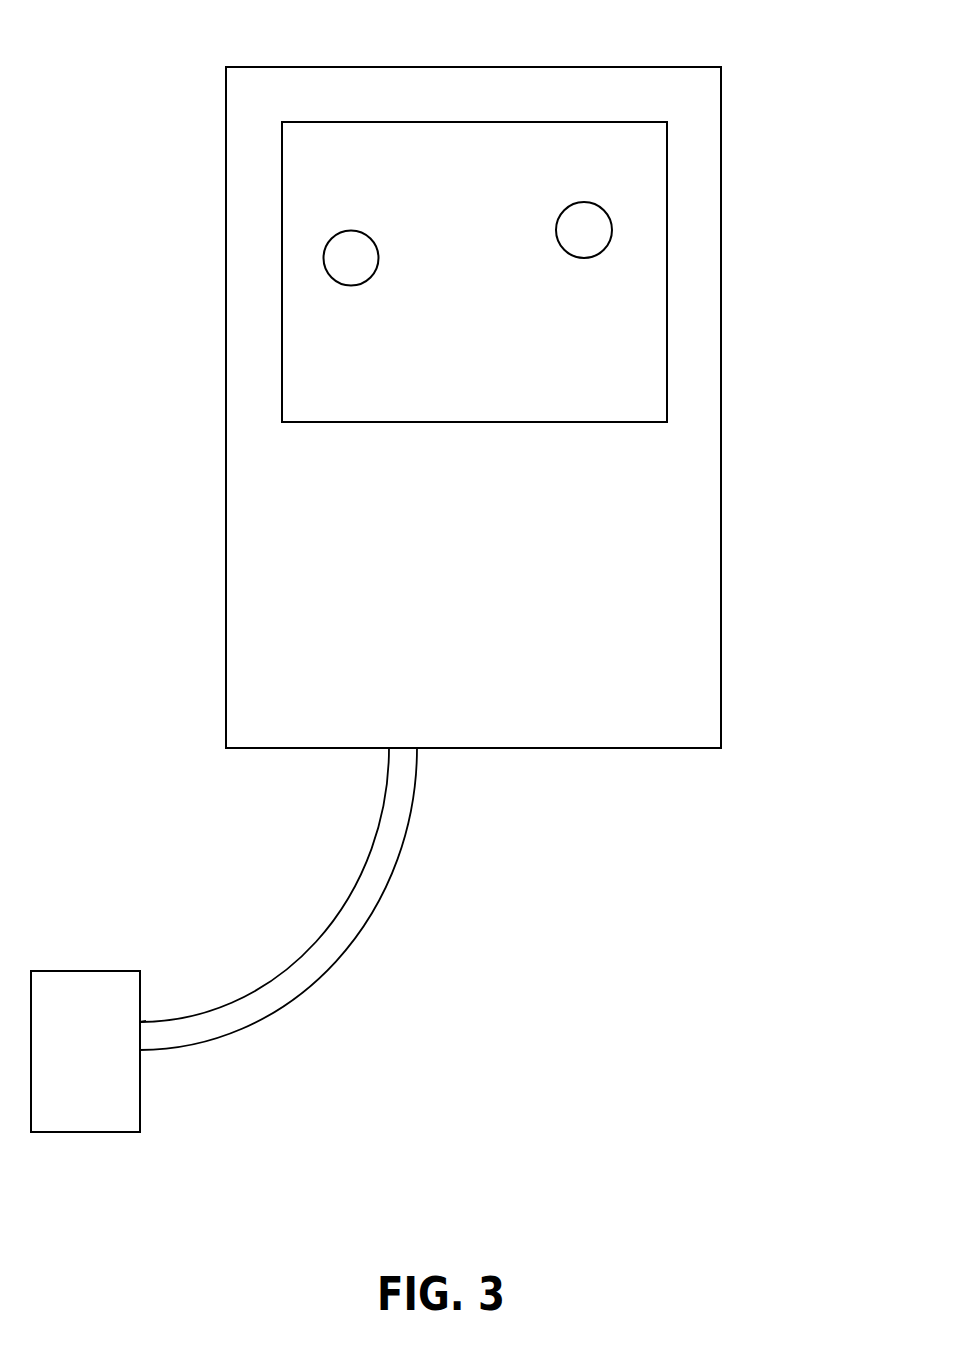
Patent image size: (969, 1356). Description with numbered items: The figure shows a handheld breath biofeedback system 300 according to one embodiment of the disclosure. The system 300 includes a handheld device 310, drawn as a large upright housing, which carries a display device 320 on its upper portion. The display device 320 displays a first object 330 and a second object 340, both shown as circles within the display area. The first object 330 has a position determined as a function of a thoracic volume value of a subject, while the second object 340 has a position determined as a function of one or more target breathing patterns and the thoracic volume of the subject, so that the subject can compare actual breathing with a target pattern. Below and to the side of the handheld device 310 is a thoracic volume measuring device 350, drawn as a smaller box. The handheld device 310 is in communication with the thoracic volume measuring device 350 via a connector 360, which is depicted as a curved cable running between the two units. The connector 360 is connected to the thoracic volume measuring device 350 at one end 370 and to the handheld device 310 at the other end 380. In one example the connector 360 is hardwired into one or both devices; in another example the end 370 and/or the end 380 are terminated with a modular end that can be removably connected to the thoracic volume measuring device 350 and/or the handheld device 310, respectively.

The handheld breath biofeedback system 300 is at (215, 32).
The handheld device 310 is at (697, 175).
The display device 320 is at (612, 367).
The first object 330 is at (347, 257).
The second object 340 is at (583, 229).
The thoracic volume measuring device 350 is at (84, 1050).
The connector 360 is at (343, 927).
The end 370 is at (143, 1052).
The end 380 is at (417, 750).